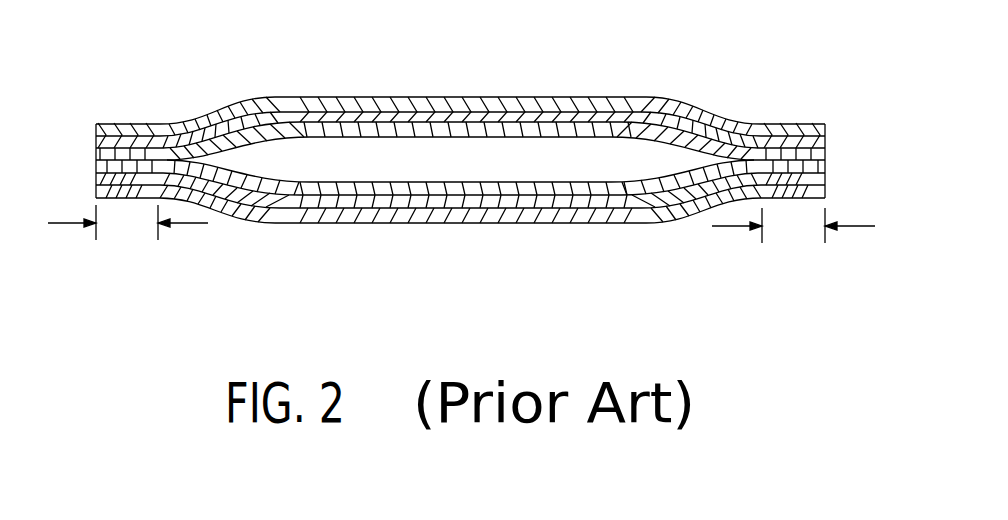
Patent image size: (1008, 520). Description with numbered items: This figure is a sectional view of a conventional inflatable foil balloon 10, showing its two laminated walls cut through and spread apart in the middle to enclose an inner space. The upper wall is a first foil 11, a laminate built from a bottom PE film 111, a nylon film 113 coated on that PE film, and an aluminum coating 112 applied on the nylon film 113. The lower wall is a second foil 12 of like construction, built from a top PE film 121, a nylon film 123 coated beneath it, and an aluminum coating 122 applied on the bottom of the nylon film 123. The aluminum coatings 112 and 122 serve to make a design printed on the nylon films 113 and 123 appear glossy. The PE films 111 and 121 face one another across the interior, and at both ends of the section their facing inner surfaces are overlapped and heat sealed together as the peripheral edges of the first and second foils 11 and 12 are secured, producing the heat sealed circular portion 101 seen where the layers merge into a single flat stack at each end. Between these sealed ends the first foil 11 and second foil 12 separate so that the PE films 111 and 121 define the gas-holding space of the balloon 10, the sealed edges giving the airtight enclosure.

The inflatable foil balloon 10 is at (461, 171).
The heat sealed circular portion 101 is at (105, 232).
The first foil 11 is at (460, 88).
The PE film 111 is at (358, 130).
The aluminum coating 112 is at (222, 108).
The nylon film 113 is at (635, 112).
The second foil 12 is at (460, 226).
The PE film 121 is at (287, 190).
The aluminum coating 122 is at (229, 215).
The nylon film 123 is at (690, 205).